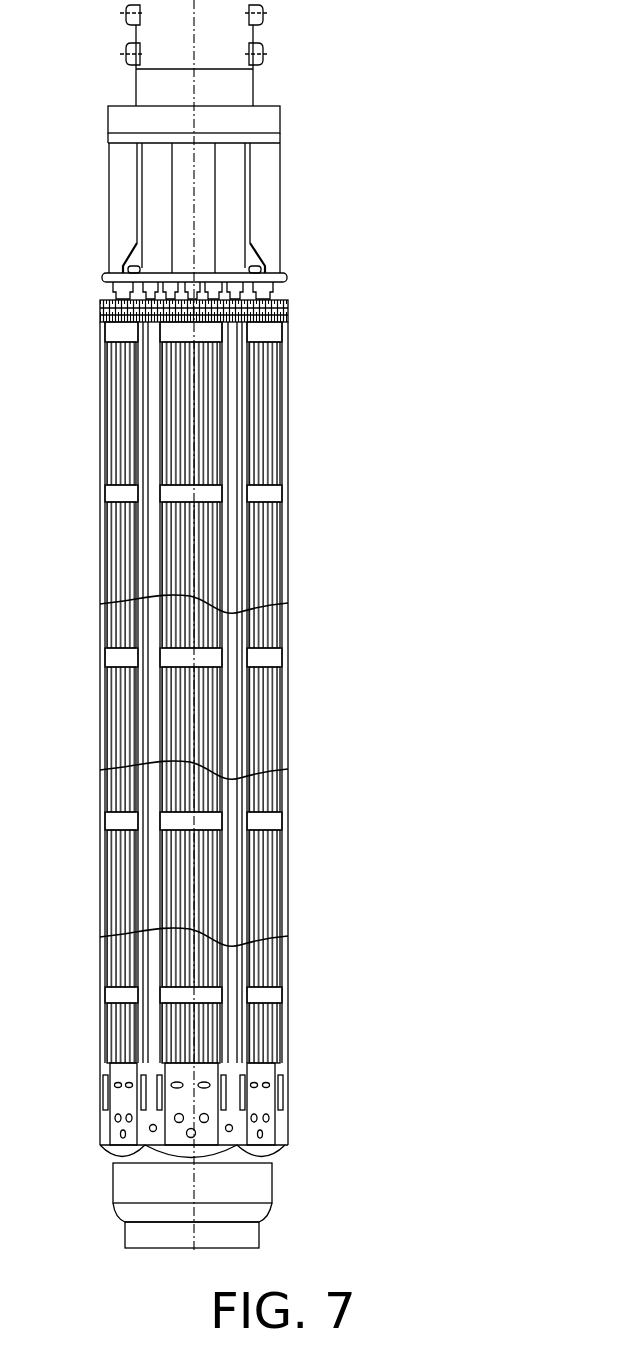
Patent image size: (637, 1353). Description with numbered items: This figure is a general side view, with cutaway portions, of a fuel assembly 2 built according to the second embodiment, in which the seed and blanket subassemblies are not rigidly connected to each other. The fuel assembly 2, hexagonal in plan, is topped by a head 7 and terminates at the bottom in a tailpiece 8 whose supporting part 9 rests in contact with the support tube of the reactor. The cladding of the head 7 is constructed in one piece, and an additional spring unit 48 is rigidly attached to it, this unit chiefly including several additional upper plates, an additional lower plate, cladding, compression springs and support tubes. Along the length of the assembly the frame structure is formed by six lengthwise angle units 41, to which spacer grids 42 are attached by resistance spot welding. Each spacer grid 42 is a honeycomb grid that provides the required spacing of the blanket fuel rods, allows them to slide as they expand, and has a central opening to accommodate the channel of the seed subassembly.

The head 7 is at (326, 153).
The additional spring unit 48 is at (127, 217).
The lengthwise angle units 41 is at (155, 453).
The spacer grids 42 is at (262, 820).
The fuel assembly 2 is at (338, 800).
The tailpiece 8 is at (324, 1162).
The supporting part 9 is at (254, 1238).